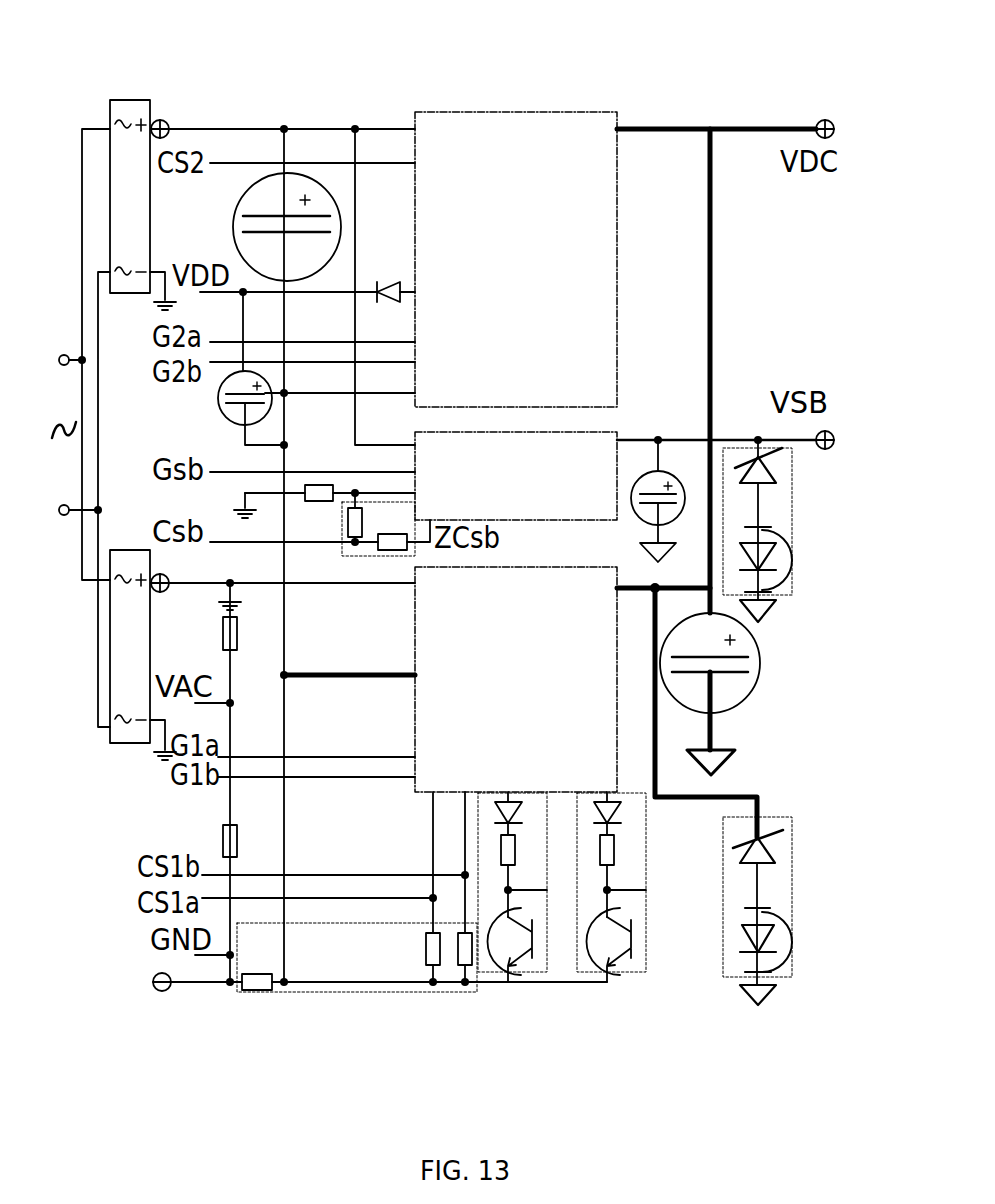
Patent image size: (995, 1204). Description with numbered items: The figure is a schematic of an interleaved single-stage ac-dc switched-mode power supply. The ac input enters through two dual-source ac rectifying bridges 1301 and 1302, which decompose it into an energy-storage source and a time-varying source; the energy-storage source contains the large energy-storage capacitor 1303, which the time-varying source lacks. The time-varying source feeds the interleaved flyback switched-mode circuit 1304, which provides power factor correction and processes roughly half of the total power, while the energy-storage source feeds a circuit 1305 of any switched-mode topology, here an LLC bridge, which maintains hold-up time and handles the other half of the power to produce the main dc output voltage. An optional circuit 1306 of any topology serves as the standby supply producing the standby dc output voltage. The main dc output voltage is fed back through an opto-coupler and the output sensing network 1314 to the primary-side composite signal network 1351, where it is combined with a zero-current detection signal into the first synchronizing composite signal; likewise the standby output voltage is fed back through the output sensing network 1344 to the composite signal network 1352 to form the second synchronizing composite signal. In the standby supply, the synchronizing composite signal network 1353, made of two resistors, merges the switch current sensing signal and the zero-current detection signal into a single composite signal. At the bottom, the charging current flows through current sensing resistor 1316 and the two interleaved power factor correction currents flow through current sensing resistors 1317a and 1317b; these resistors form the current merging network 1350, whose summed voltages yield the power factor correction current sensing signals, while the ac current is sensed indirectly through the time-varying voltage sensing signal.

The ac rectifying bridge 1301 is at (132, 98).
The ac rectifying bridge 1302 is at (128, 752).
The large energy-storage capacitor 1303 is at (295, 176).
The interleaved flyback switched-mode circuit 1304 is at (413, 680).
The circuit of any switched-mode circuit topology 1305 is at (512, 112).
The optional circuit of any switched-mode circuit topology 1306 is at (617, 432).
The output sensing network 1314 is at (770, 817).
The current sensing resistor 1316 is at (255, 995).
The current sensing resistor 1317a is at (427, 960).
The current sensing resistor 1317b is at (460, 962).
The output sensing network 1344 is at (790, 540).
The current sense resistor network 1350 is at (324, 932).
The primary-side composite signal network 1351 is at (510, 978).
The primary-side composite signal network 1352 is at (612, 978).
The synchronizing composite signal network 1353 is at (388, 558).